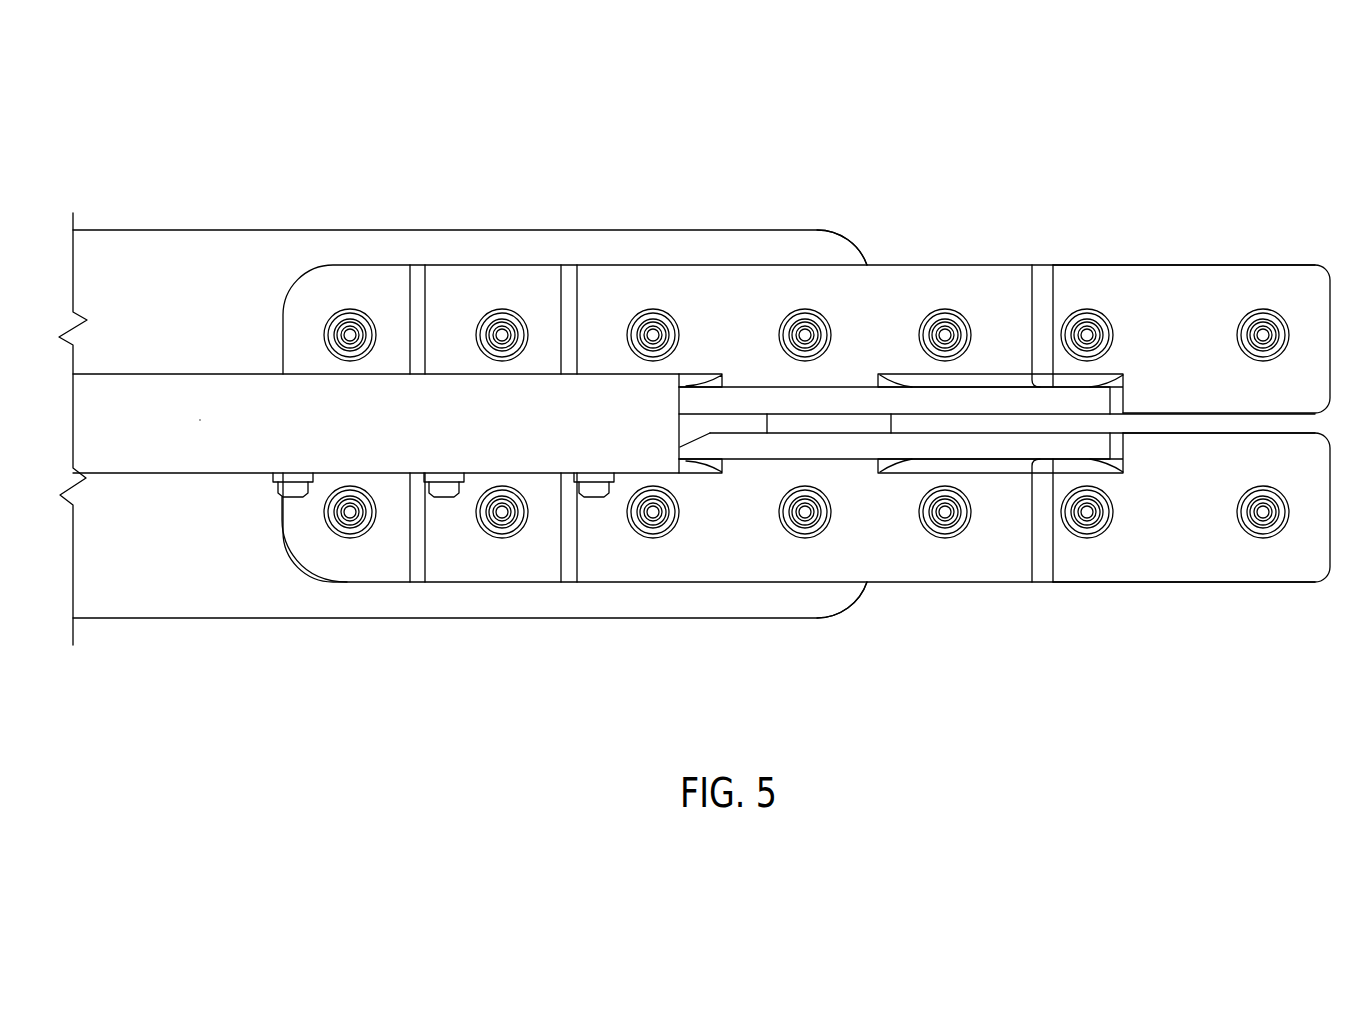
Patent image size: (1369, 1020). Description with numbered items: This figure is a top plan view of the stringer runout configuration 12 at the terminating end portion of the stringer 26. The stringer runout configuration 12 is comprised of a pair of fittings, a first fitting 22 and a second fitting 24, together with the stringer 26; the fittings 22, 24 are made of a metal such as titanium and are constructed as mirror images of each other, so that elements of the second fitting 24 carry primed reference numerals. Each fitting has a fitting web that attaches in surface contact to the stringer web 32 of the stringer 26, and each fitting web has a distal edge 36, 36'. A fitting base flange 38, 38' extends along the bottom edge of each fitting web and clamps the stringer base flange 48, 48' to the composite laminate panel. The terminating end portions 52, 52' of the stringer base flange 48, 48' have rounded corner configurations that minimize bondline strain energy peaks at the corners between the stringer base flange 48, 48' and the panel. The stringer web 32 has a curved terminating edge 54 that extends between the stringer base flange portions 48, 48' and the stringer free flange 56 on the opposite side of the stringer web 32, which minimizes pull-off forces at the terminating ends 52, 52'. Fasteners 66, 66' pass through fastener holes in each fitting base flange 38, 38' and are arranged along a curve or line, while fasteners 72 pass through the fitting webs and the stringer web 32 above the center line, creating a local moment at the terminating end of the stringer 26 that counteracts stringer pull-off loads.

The stringer runout configuration 12 is at (702, 376).
The first fitting 22 is at (1189, 262).
The second fitting 24 is at (1190, 583).
The stringer 26 is at (158, 370).
The stringer web 32 is at (777, 413).
The distal edge 36 is at (997, 363).
The distal edge 36' is at (997, 485).
The fitting base flange 38 is at (1000, 309).
The fitting base flange 38' is at (1000, 539).
The stringer base flange 48 is at (799, 267).
The stringer base flange 48' is at (799, 583).
The terminating end portion 52 is at (899, 229).
The terminating end portion 52' is at (901, 622).
The terminating edge 54 is at (732, 422).
The stringer free flange 56 is at (242, 447).
The fasteners 66 is at (831, 273).
The fasteners 66' is at (835, 576).
The fasteners 72 is at (305, 497).